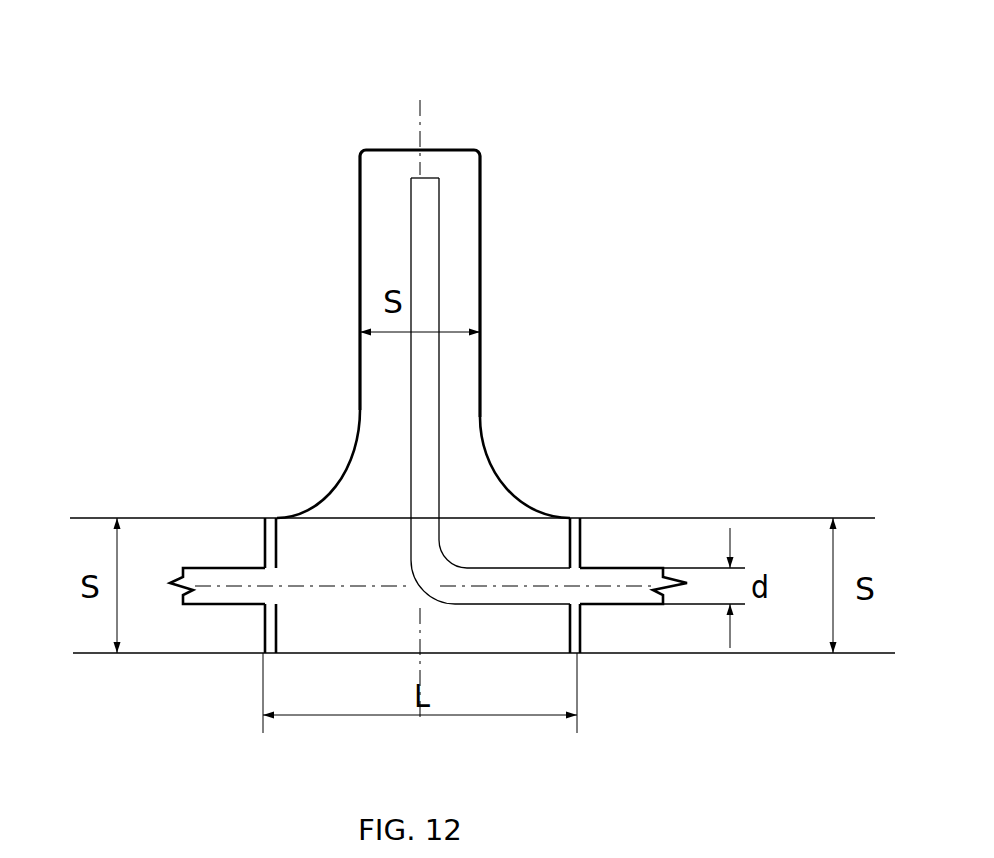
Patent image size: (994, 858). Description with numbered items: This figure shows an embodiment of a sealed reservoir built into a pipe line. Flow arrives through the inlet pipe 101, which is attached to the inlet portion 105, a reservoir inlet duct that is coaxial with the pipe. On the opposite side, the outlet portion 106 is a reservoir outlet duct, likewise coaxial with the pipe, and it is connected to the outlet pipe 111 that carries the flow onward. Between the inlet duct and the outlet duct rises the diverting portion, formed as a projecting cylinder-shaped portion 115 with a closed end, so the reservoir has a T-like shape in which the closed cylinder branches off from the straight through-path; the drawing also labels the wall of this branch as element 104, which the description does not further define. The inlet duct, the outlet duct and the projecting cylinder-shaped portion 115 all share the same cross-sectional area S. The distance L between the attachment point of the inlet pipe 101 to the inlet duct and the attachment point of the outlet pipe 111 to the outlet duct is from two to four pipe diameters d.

The inlet pipe 101 is at (217, 610).
The branch pipe 104 is at (482, 267).
The inlet portion 105 is at (298, 512).
The outlet portion 106 is at (538, 507).
The outlet pipe 111 is at (622, 607).
The projecting cylinder-shaped portion 115 is at (360, 227).